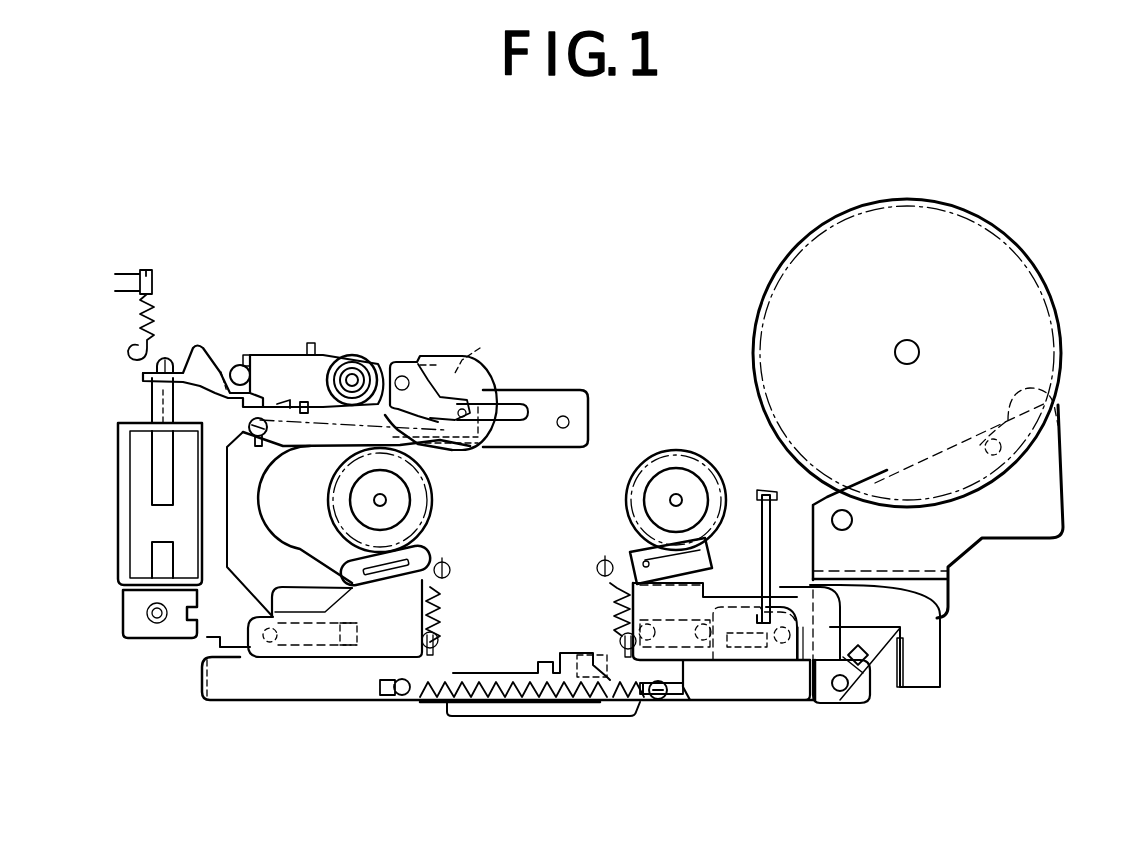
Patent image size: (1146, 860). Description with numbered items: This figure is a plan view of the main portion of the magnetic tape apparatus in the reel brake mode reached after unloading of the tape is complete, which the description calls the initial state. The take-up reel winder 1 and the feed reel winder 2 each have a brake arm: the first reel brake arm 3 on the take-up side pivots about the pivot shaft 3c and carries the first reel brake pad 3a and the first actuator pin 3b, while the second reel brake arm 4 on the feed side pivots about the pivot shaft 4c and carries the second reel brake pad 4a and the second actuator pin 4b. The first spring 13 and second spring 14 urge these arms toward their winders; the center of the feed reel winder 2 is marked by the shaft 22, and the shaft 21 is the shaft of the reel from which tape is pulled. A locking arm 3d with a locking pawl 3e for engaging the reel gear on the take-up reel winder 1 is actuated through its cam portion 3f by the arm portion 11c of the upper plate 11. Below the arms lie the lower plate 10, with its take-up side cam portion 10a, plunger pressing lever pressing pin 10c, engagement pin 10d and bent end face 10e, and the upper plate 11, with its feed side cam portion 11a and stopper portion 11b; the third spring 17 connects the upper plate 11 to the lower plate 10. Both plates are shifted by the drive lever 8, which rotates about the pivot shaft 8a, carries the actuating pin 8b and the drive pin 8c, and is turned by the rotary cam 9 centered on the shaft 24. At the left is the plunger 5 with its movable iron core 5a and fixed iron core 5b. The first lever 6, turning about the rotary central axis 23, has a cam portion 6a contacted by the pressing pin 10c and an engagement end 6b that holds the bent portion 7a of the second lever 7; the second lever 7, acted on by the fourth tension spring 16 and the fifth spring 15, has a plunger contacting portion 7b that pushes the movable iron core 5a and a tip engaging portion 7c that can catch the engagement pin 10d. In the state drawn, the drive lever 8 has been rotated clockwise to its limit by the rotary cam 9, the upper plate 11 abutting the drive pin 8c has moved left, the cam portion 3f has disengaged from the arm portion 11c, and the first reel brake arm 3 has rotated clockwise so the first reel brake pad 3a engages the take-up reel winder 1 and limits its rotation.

The take-up reel winder 1 is at (676, 452).
The feed reel winder 2 is at (432, 470).
The first reel brake arm 3 is at (690, 650).
The first reel brake pad 3a is at (632, 545).
The first actuator pin 3b is at (785, 660).
The pivot shaft 3c is at (718, 650).
The locking arm 3d is at (773, 495).
The locking pawl 3e is at (755, 525).
The cam portion 3f is at (867, 690).
The second reel brake arm 4 is at (323, 652).
The second reel brake pad 4a is at (425, 553).
The second actuator pin 4b is at (278, 662).
The pivot shaft 4c is at (338, 650).
The plunger 5 is at (118, 510).
The movable iron core 5a is at (150, 410).
The iron core 5b is at (150, 567).
The first lever 6 is at (500, 392).
The cam portion 6a is at (455, 372).
The engagement end 6b is at (285, 380).
The second lever 7 is at (290, 360).
The bent portion 7a is at (300, 392).
The plunger contacting portion 7b is at (150, 373).
The tip engaging portion 7c is at (545, 392).
The drive lever 8 is at (1055, 540).
The pivot shaft 8a is at (852, 518).
The actuating pin 8b is at (1003, 440).
The drive pin 8c is at (845, 690).
The rotary cam 9 is at (972, 213).
The lower plate 10 is at (935, 690).
The take-up side cam portion 10a is at (208, 655).
The plunger pressing lever pressing pin 10c is at (400, 376).
The engagement pin 10d is at (465, 365).
The bent end face 10e is at (350, 646).
The upper plate 11 is at (815, 700).
The feed side cam portion 11a is at (248, 647).
The stopper portion 11b is at (655, 699).
The arm portion 11c is at (847, 613).
The first spring 13 is at (610, 583).
The second spring 14 is at (445, 610).
The fifth spring 15 is at (150, 310).
The fourth tension spring 16 is at (246, 365).
The third spring 17 is at (455, 702).
The shaft 21 is at (682, 498).
The shaft 22 is at (386, 500).
The rotary central axis 23 is at (352, 372).
The reel shaft 24 is at (917, 345).